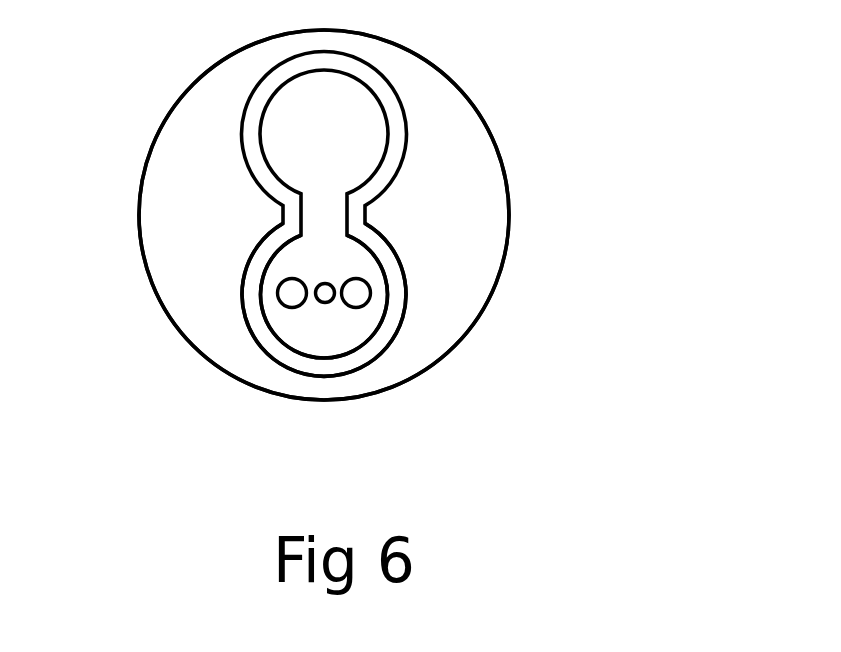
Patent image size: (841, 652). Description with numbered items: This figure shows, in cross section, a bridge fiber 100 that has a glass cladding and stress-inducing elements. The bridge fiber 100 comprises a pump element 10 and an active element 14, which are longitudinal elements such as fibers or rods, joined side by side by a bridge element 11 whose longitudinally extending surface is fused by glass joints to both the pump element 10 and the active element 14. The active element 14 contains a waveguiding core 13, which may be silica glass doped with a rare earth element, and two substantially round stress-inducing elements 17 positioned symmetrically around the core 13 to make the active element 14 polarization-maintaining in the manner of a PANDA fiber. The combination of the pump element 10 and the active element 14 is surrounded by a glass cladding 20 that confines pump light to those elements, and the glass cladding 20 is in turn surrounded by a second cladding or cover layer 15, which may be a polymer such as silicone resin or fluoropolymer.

The bridge fiber 100 is at (522, 70).
The cladding 15 is at (488, 205).
The pump element 10 is at (262, 153).
The bridge element 11 is at (312, 217).
The active element 14 is at (262, 307).
The glass cladding 20 is at (410, 277).
The stress-inducing elements 17 is at (291, 308).
The core 13 is at (325, 303).